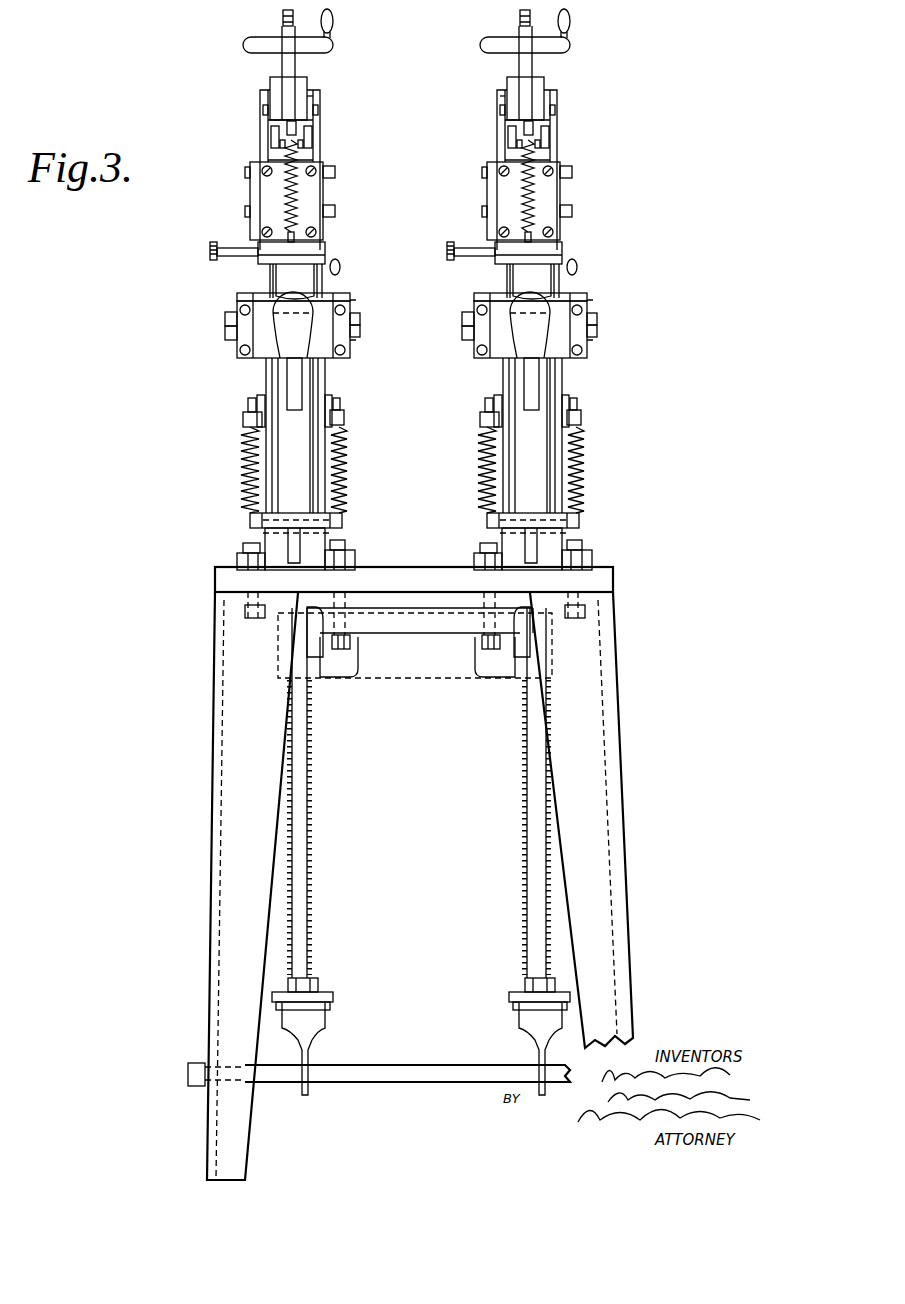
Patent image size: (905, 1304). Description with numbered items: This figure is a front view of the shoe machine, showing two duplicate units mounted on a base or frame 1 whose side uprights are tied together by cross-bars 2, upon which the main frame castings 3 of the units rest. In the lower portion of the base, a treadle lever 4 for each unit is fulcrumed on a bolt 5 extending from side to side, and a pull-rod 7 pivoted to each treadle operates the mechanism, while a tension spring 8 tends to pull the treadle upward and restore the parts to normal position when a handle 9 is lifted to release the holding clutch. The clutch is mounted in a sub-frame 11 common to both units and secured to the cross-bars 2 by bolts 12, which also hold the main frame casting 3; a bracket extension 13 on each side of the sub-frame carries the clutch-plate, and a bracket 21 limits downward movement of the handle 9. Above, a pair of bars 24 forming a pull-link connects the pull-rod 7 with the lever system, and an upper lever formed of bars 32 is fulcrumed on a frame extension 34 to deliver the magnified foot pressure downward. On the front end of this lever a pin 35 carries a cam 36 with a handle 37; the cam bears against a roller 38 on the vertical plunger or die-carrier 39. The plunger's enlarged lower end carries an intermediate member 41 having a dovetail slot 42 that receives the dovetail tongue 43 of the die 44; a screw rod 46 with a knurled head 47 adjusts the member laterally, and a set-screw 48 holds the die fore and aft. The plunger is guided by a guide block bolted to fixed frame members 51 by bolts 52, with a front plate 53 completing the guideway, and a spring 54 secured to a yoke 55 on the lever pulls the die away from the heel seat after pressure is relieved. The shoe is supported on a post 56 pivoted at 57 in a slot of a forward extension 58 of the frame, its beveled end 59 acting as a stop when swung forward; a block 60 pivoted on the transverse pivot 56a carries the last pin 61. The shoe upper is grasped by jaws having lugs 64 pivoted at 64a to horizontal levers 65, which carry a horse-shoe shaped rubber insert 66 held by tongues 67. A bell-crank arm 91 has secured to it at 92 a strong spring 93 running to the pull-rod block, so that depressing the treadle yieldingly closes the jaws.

The base or frame 1 is at (598, 697).
The cross-bars 2 is at (605, 580).
The main frame casting 3 is at (270, 490).
The treadle lever 4 is at (330, 998).
The bolt 5 is at (410, 1066).
The pull-rod 7 is at (303, 885).
The tension spring 8 is at (312, 820).
The handle 9 is at (318, 660).
The sub-frame 11 is at (420, 637).
The bolts 12 is at (340, 540).
The bracket extension 13 is at (352, 678).
The bracket 21 is at (345, 640).
The bars constituting a pull-link 24 is at (315, 370).
The bars forming a lever 32 is at (280, 85).
The frame extension 34 is at (262, 97).
The pin 35 is at (305, 100).
The cam 36 is at (272, 135).
The handle 37 is at (405, 30).
The roller 38 is at (252, 180).
The vertical plunger or slidable die-carrier 39 is at (305, 150).
The intermediate member 41 is at (265, 265).
The dovetail slot 42 is at (268, 275).
The dovetail tongue 43 is at (300, 255).
The die 44 is at (305, 285).
The screw rod 46 is at (260, 215).
The knurled head 47 is at (210, 249).
The set-screw 48 is at (341, 267).
The fixed frame members 51 is at (326, 190).
The bolts 52 is at (485, 207).
The front plate 53 is at (312, 225).
The spring 54 is at (290, 190).
The yoke 55 is at (300, 125).
The post 56 is at (300, 478).
The transverse pivot 56a is at (318, 378).
The pivot 57 is at (265, 532).
The forward extension 58 is at (355, 560).
The bevel 59 is at (243, 560).
The block 60 is at (300, 395).
The last pin 61 is at (262, 368).
The lugs 64 is at (360, 340).
The pivot 64a is at (352, 305).
The horizontal levers 65 is at (228, 335).
The rubber insert 66 is at (255, 338).
The tongues 67 is at (360, 325).
The arm of bell-crank lever 91 is at (248, 420).
The spring attachment point 92 is at (250, 440).
The strong spring 93 is at (248, 505).